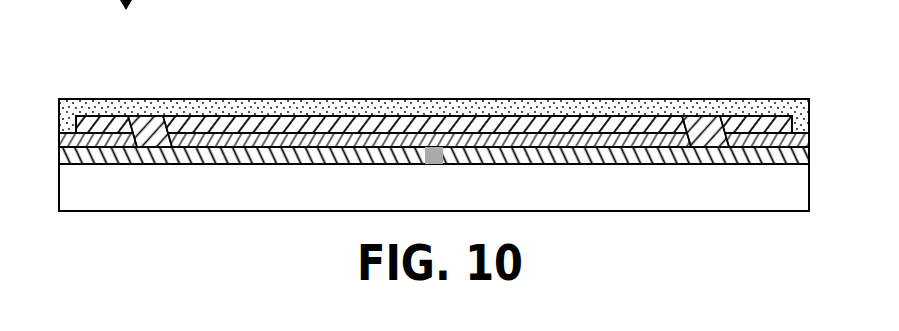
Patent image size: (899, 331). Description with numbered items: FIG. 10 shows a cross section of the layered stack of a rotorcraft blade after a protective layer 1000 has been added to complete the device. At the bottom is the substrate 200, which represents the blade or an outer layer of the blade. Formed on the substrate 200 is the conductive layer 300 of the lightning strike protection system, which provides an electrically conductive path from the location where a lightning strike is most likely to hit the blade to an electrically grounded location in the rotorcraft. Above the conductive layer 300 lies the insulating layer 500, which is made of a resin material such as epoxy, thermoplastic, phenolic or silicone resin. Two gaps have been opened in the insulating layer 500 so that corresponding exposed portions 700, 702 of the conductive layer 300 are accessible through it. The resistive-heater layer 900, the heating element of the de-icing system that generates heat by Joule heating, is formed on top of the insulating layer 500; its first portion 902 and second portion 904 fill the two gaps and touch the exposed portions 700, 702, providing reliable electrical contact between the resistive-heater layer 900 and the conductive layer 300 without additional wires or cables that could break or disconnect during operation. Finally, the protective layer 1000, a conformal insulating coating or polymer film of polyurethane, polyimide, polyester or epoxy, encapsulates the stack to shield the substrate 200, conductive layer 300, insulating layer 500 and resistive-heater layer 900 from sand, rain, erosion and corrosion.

The protective layer 1000 is at (333, 108).
The resistive-heater layer 900 is at (745, 128).
The insulating layer 500 is at (800, 134).
The conductive layer 300 is at (797, 155).
The substrate 200 is at (797, 192).
The exposed portion 700 is at (681, 126).
The exposed portion 702 is at (133, 128).
The first portion 902 is at (716, 126).
The second portion 904 is at (166, 126).